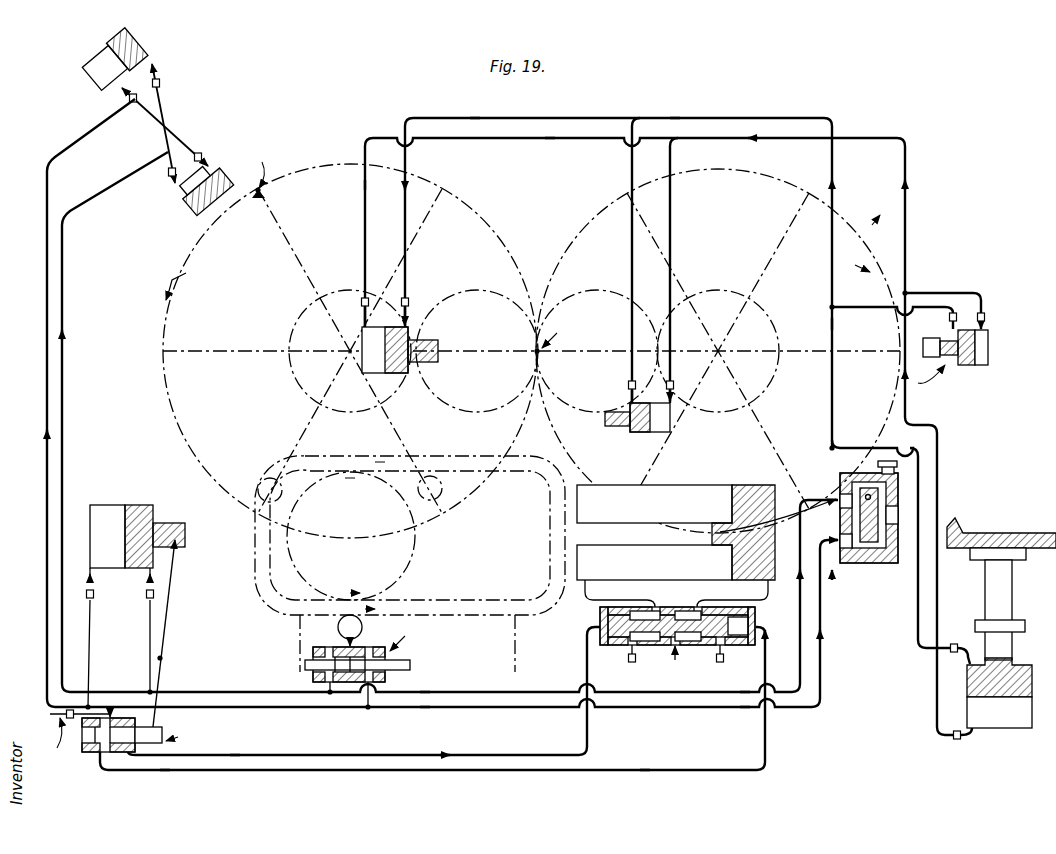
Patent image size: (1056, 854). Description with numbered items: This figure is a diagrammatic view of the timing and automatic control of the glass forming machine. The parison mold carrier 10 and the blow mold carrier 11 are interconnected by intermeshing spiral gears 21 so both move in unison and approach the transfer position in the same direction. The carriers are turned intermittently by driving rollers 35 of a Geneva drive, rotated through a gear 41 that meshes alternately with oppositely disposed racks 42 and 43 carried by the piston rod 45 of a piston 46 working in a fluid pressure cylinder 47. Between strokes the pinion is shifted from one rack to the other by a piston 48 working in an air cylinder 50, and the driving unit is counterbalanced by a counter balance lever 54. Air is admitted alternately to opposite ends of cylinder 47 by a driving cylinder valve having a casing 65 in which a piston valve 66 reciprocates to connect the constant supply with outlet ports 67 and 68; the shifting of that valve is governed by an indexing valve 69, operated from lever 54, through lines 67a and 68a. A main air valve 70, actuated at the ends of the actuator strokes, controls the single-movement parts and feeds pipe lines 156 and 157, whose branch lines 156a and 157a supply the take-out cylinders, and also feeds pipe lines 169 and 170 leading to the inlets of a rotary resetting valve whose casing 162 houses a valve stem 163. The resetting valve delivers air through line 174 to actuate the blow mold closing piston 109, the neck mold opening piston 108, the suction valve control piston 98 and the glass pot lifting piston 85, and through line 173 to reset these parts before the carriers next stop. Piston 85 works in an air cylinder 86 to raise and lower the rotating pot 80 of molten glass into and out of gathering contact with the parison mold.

The mold carrier 10 is at (857, 227).
The mold carrier 11 is at (165, 272).
The intermeshing gears 21 is at (348, 290).
The driving rollers 35 is at (442, 486).
The gear 41 is at (418, 555).
The rack 42 is at (478, 600).
The rack 43 is at (462, 458).
The piston rod 45 is at (617, 535).
The piston 46 is at (750, 490).
The fluid pressure cylinder 47 is at (700, 486).
The piston 48 is at (140, 508).
The air cylinder 50 is at (106, 508).
The counter balance lever 54 is at (168, 625).
The valve casing 65 is at (757, 612).
The piston valve 66 is at (600, 620).
The outlet port 67 is at (660, 598).
The outlet port 68 is at (700, 598).
The line 67a is at (462, 757).
The line 68a is at (473, 778).
The indexing valve 69 is at (138, 717).
The main air valve 70 is at (313, 656).
The pot 80 is at (968, 550).
The piston 85 is at (990, 668).
The air cylinder 86 is at (1016, 730).
The suction valve control piston 98 is at (975, 346).
The piston 108 is at (645, 432).
The piston 109 is at (396, 378).
The pipe line 156 is at (44, 333).
The pipe line 157 is at (64, 340).
The branch line 156a is at (126, 100).
The branch line 157a is at (165, 110).
The valve casing 162 is at (895, 502).
The valve stem 163 is at (866, 556).
The pipe line 169 is at (793, 710).
The pipe line 170 is at (826, 694).
The line 173 is at (790, 432).
The line 174 is at (910, 266).